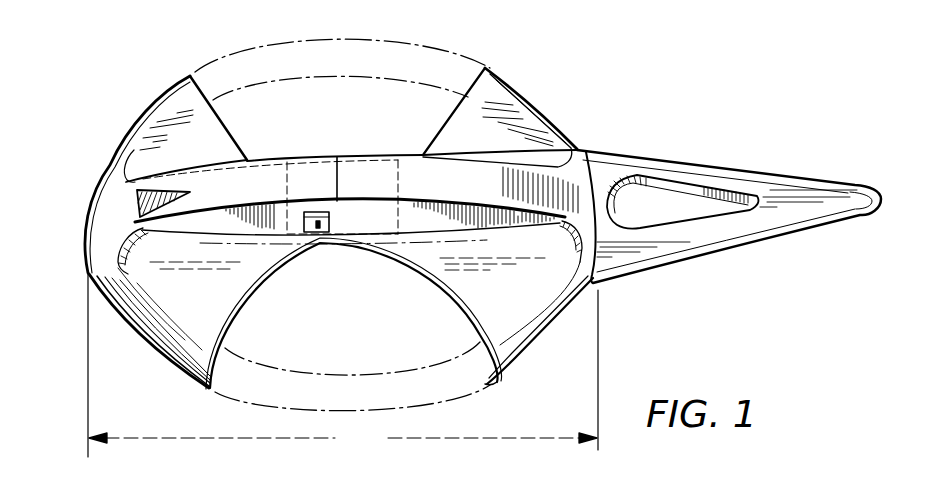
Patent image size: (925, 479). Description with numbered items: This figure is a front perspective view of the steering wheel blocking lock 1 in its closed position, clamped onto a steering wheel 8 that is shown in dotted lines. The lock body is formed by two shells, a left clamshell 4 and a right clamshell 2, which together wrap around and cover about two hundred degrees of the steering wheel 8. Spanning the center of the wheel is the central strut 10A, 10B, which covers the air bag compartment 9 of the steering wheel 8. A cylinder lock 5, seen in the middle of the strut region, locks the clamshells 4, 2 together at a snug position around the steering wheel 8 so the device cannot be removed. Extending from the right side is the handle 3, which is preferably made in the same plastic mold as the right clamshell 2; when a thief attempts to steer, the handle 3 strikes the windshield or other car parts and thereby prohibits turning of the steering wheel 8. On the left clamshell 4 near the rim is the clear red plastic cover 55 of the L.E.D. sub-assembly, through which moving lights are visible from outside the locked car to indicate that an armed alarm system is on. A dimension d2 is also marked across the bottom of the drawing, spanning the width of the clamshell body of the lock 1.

The steering wheel blocking lock 1 is at (113, 95).
The right clamshell 2 is at (552, 130).
The handle 3 is at (838, 198).
The left clamshell 4 is at (110, 152).
The cylinder lock 5 is at (319, 232).
The steering wheel 8 is at (290, 388).
The air bag compartment 9 is at (372, 184).
The central strut 10A is at (258, 175).
The central strut 10B is at (432, 180).
The clear red plastic cover 55 is at (95, 211).
The diameter d2 is at (343, 364).